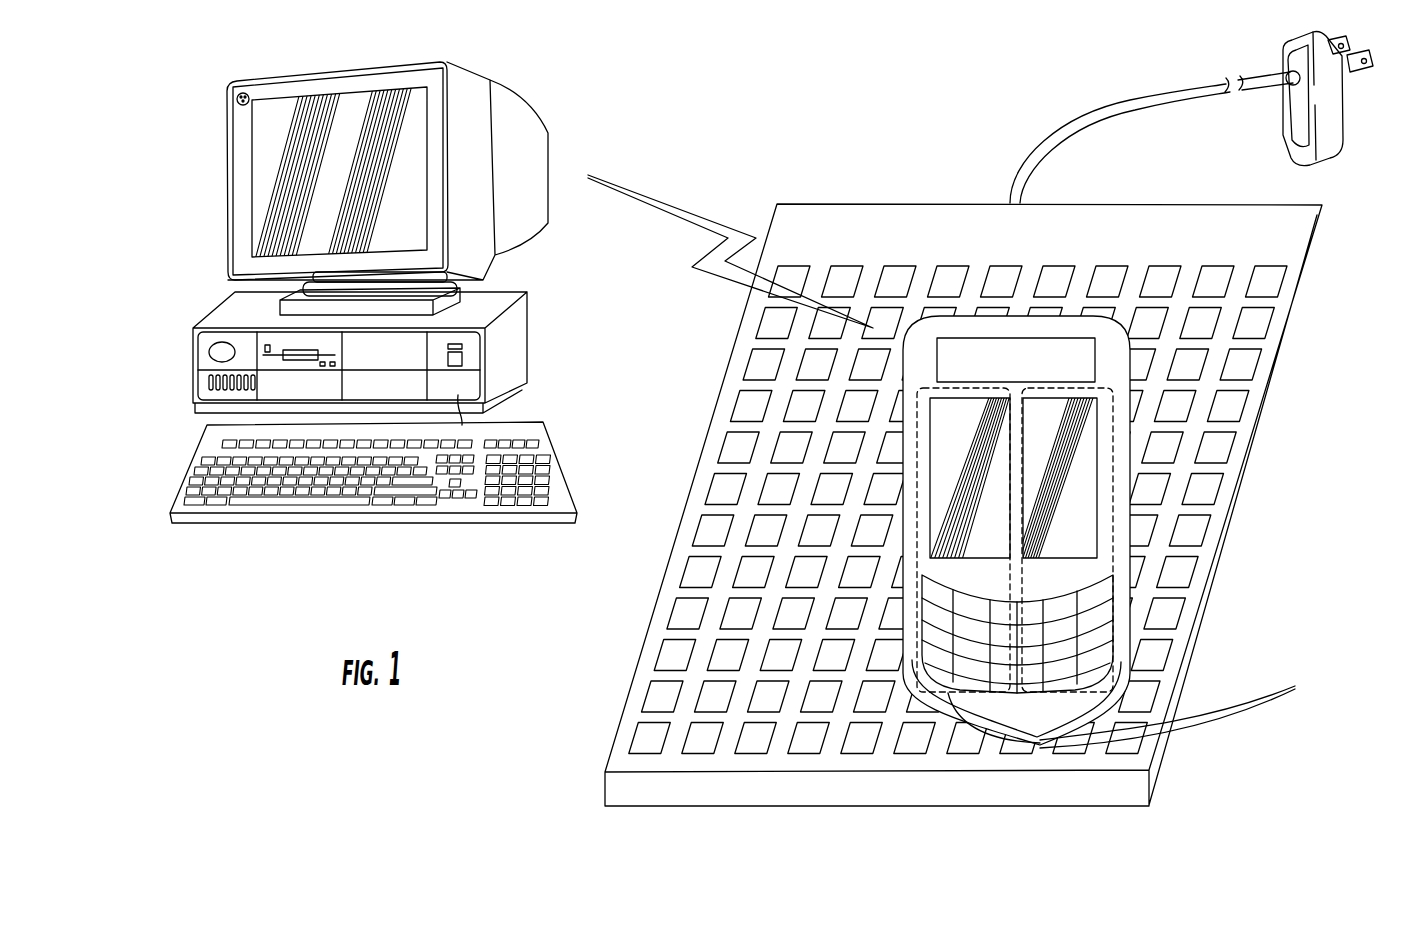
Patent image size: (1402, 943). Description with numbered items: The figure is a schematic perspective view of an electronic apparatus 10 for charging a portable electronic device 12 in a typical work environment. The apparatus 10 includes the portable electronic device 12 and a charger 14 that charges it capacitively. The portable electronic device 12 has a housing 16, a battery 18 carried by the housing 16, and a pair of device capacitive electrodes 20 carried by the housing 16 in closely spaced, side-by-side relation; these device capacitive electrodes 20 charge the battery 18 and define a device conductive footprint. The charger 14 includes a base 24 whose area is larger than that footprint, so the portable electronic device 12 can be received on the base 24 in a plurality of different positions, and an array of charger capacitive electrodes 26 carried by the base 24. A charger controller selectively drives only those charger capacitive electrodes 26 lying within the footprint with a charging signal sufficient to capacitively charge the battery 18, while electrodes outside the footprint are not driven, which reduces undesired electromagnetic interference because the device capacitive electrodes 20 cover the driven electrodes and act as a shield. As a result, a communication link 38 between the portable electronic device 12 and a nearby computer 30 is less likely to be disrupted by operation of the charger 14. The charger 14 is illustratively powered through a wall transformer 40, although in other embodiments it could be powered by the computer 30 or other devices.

The electronic apparatus 10 is at (955, 430).
The portable electronic device 12 is at (1123, 530).
The charger 14 is at (1240, 535).
The housing 16 is at (1128, 466).
The battery 18 is at (1097, 368).
The device capacitive electrodes 20 is at (1179, 709).
The base 24 is at (1300, 307).
The charger capacitive electrodes 26 is at (647, 698).
The computer 30 is at (545, 347).
The communication link 38 is at (717, 222).
The wall transformer 40 is at (1313, 165).